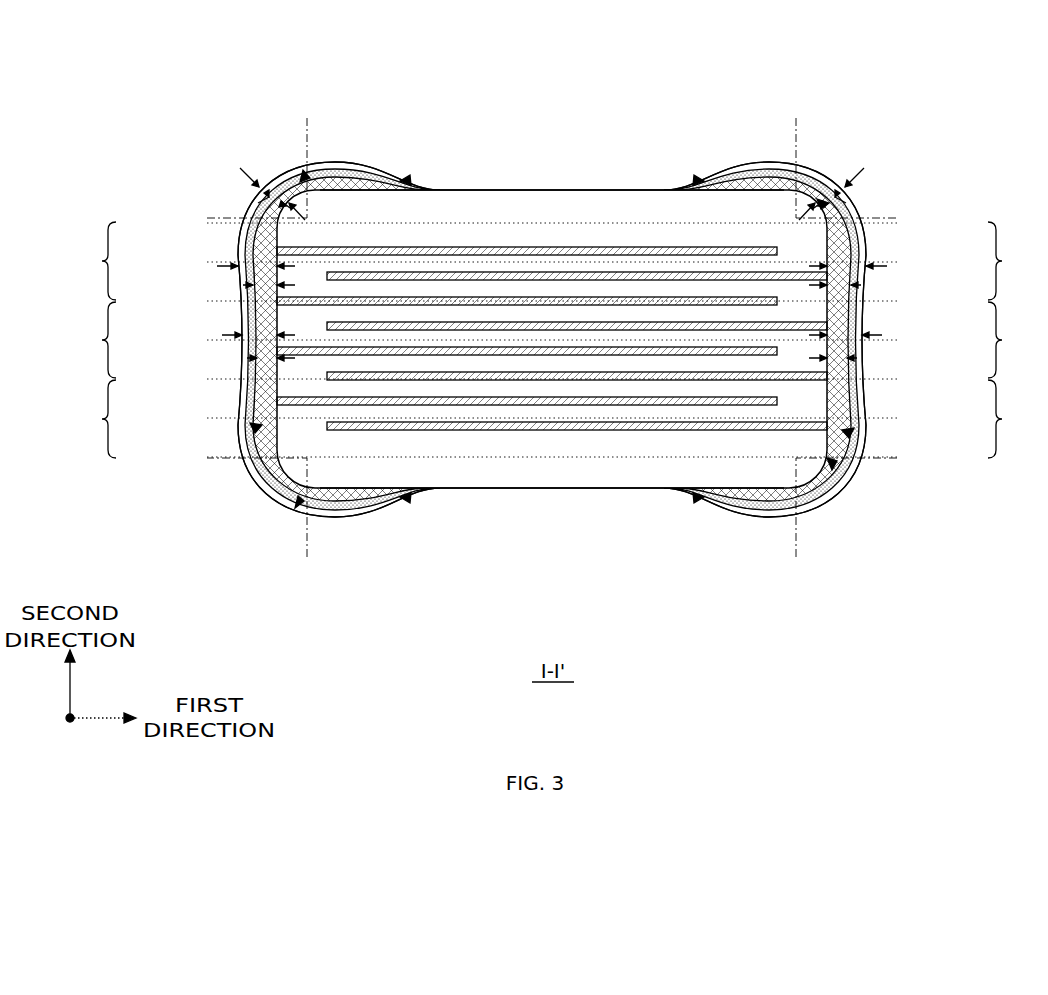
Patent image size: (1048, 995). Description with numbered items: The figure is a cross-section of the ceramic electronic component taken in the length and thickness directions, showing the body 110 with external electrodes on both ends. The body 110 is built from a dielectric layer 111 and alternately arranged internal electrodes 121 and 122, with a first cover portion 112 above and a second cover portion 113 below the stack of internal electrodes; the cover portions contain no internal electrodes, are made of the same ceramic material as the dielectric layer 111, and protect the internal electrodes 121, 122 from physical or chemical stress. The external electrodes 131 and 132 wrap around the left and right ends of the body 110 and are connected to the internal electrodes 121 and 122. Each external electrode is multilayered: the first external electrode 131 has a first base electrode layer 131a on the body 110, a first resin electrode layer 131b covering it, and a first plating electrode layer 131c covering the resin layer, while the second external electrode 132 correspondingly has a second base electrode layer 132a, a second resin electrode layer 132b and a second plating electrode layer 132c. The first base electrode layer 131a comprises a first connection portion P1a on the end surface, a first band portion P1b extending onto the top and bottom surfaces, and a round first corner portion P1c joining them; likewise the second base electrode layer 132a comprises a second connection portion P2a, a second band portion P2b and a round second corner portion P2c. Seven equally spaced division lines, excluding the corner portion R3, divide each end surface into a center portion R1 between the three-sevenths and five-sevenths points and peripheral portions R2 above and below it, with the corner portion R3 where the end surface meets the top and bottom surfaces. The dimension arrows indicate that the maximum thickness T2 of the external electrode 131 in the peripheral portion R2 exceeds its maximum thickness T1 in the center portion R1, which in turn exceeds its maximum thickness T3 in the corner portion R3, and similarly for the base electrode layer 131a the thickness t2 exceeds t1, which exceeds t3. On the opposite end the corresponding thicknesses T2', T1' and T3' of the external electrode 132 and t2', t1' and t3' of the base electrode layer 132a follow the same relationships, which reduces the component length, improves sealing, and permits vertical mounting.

The body 110 is at (595, 490).
The dielectric layer 111 is at (555, 470).
The first cover portion 112 is at (515, 215).
The second cover portion 113 is at (516, 470).
The internal electrode 121 is at (552, 246).
The internal electrode 122 is at (596, 272).
The external electrode 131 is at (293, 66).
The first base electrode layer 131a is at (392, 182).
The first resin electrode layer 131b is at (370, 172).
The first plating electrode layer 131c is at (342, 166).
The external electrode 132 is at (812, 66).
The second base electrode layer 132a is at (712, 182).
The second resin electrode layer 132b is at (734, 172).
The second plating electrode layer 132c is at (762, 166).
The first connection portion P1a is at (255, 428).
The first band portion P1b is at (403, 180).
The first corner portion P1c is at (301, 180).
The second connection portion P2a is at (848, 430).
The second band portion P2b is at (701, 180).
The second corner portion P2c is at (833, 205).
The center portion R1 is at (552, 340).
The peripheral portion R2 is at (552, 340).
The corner portion R3 is at (262, 172).
The maximum thickness in center portion T1 is at (232, 350).
The maximum thickness in center portion t1 is at (233, 373).
The maximum thickness in peripheral portion T2 is at (232, 269).
The maximum thickness in peripheral portion t2 is at (233, 291).
The maximum thickness in corner portion T3 is at (272, 179).
The maximum thickness of corner portion t3 is at (254, 203).
The maximum thickness in center portion T1' is at (874, 350).
The maximum thickness in center portion t1' is at (872, 373).
The maximum thickness in peripheral portion T2' is at (874, 269).
The maximum thickness in peripheral portion t2' is at (872, 291).
The maximum thickness in corner portion T3' is at (831, 179).
The maximum thickness of corner portion t3' is at (846, 193).